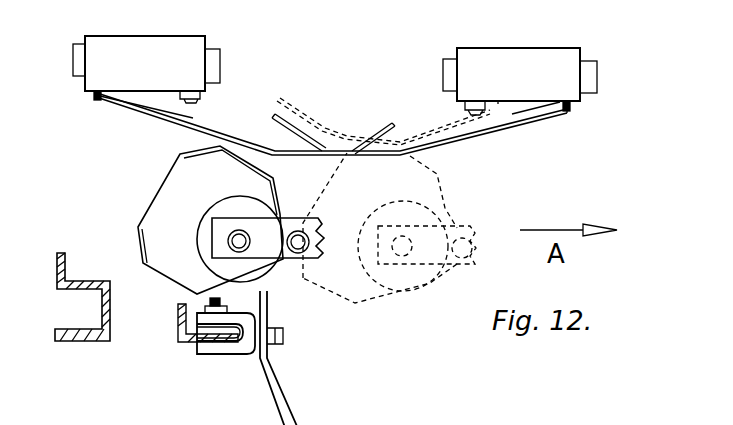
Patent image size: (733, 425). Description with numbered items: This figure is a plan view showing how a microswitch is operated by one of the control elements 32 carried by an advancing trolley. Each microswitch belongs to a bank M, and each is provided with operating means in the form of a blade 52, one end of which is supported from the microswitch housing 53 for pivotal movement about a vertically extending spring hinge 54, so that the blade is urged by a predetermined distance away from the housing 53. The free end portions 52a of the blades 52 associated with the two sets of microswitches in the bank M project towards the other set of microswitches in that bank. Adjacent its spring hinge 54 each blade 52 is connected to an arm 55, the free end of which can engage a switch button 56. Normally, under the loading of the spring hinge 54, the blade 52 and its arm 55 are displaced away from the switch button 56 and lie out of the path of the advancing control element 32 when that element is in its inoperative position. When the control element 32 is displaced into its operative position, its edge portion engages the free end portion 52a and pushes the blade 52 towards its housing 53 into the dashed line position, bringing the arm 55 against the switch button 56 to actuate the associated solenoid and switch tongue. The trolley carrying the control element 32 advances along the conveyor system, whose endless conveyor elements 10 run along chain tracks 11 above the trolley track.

The bank of microswitches m is at (200, 60).
The microswitch housing 53 is at (133, 88).
The arm 55 is at (165, 108).
The spring hinge 54 is at (97, 95).
The switch button 56 is at (200, 102).
The blade 52 is at (133, 112).
The free end portion of blade 52a is at (288, 122).
The control element 32 is at (158, 202).
The chain track 11 is at (148, 350).
The endless conveyor element 10 is at (195, 424).